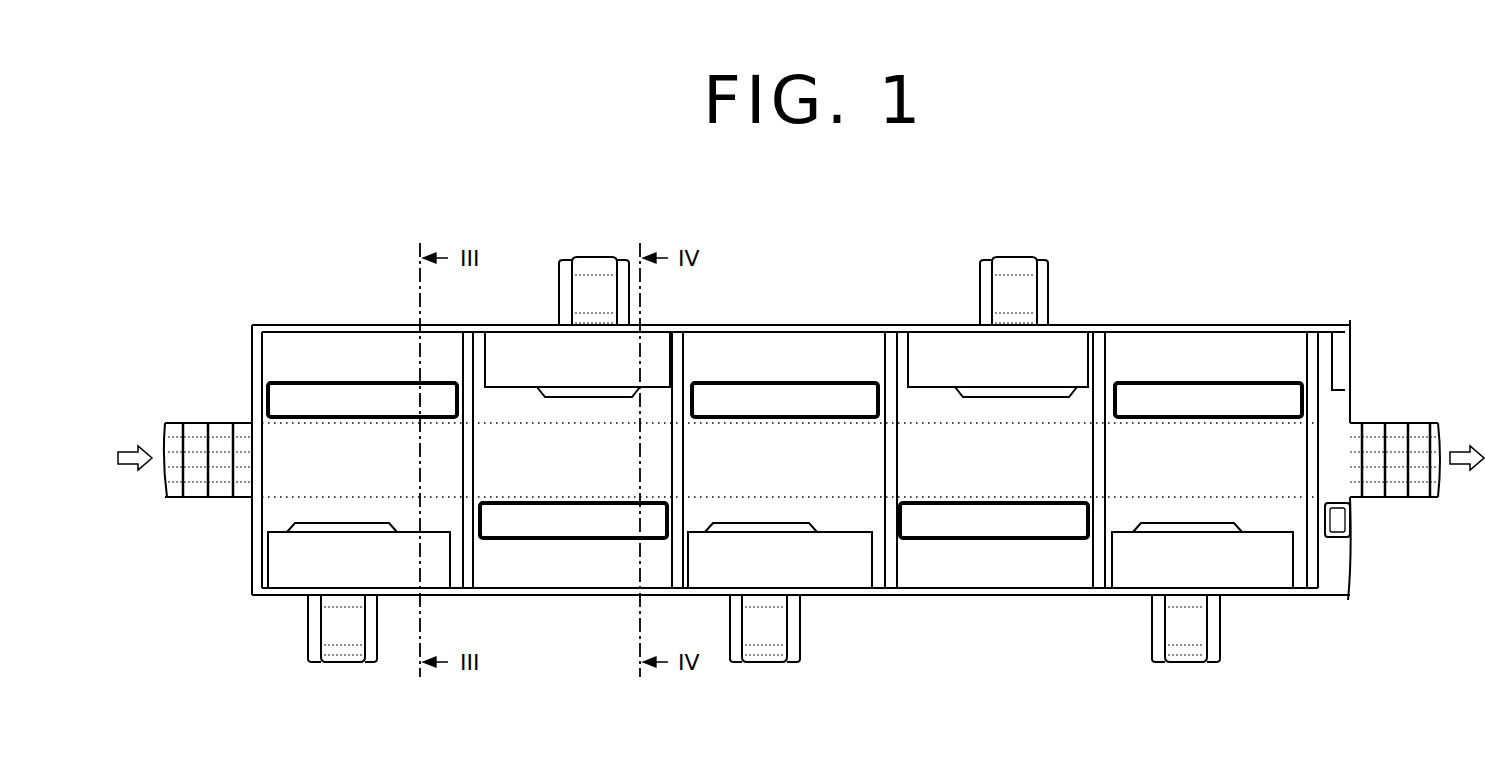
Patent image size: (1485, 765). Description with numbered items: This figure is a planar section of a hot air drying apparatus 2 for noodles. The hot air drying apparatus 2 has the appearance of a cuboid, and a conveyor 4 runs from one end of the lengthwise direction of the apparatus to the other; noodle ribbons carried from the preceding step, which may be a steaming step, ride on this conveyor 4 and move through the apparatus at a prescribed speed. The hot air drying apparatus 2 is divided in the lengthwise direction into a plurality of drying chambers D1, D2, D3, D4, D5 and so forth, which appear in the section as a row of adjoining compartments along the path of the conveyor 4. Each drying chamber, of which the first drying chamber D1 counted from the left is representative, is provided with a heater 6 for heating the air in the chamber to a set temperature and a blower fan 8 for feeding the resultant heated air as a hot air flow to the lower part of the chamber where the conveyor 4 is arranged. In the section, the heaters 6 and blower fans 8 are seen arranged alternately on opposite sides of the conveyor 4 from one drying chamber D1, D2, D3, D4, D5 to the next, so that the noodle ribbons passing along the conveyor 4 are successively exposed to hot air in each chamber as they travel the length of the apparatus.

The hot air drying apparatus 2 is at (866, 327).
The conveyor 4 is at (206, 423).
The heater 6 is at (312, 397).
The blower fan 8 is at (528, 350).
The first drying chamber D1 is at (358, 352).
The second drying chamber D2 is at (540, 562).
The third drying chamber D3 is at (775, 365).
The fourth drying chamber D4 is at (1018, 565).
The fifth drying chamber D5 is at (1233, 357).